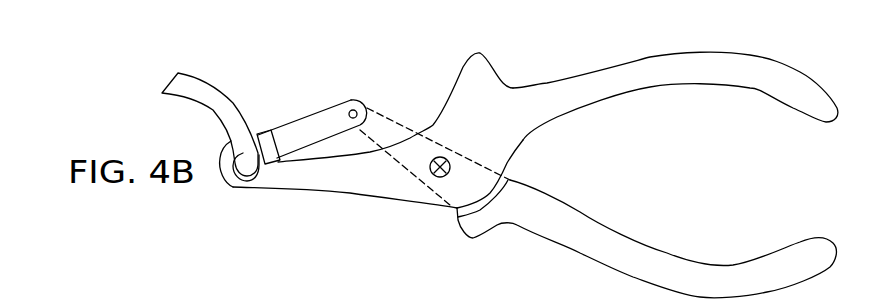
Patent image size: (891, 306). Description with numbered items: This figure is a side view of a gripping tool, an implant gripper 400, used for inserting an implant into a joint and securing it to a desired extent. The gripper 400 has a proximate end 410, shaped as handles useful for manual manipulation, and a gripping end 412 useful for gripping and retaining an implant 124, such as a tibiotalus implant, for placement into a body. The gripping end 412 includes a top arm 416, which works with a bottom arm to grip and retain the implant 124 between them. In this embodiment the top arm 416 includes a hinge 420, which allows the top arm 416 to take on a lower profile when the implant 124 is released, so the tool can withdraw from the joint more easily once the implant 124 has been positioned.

The tibiotalus implant 124 is at (196, 76).
The implant gripper 400 is at (510, 48).
The proximate end 410 is at (783, 63).
The gripping end 412 is at (308, 112).
The top arm 416 is at (330, 108).
The hinge 420 is at (359, 110).